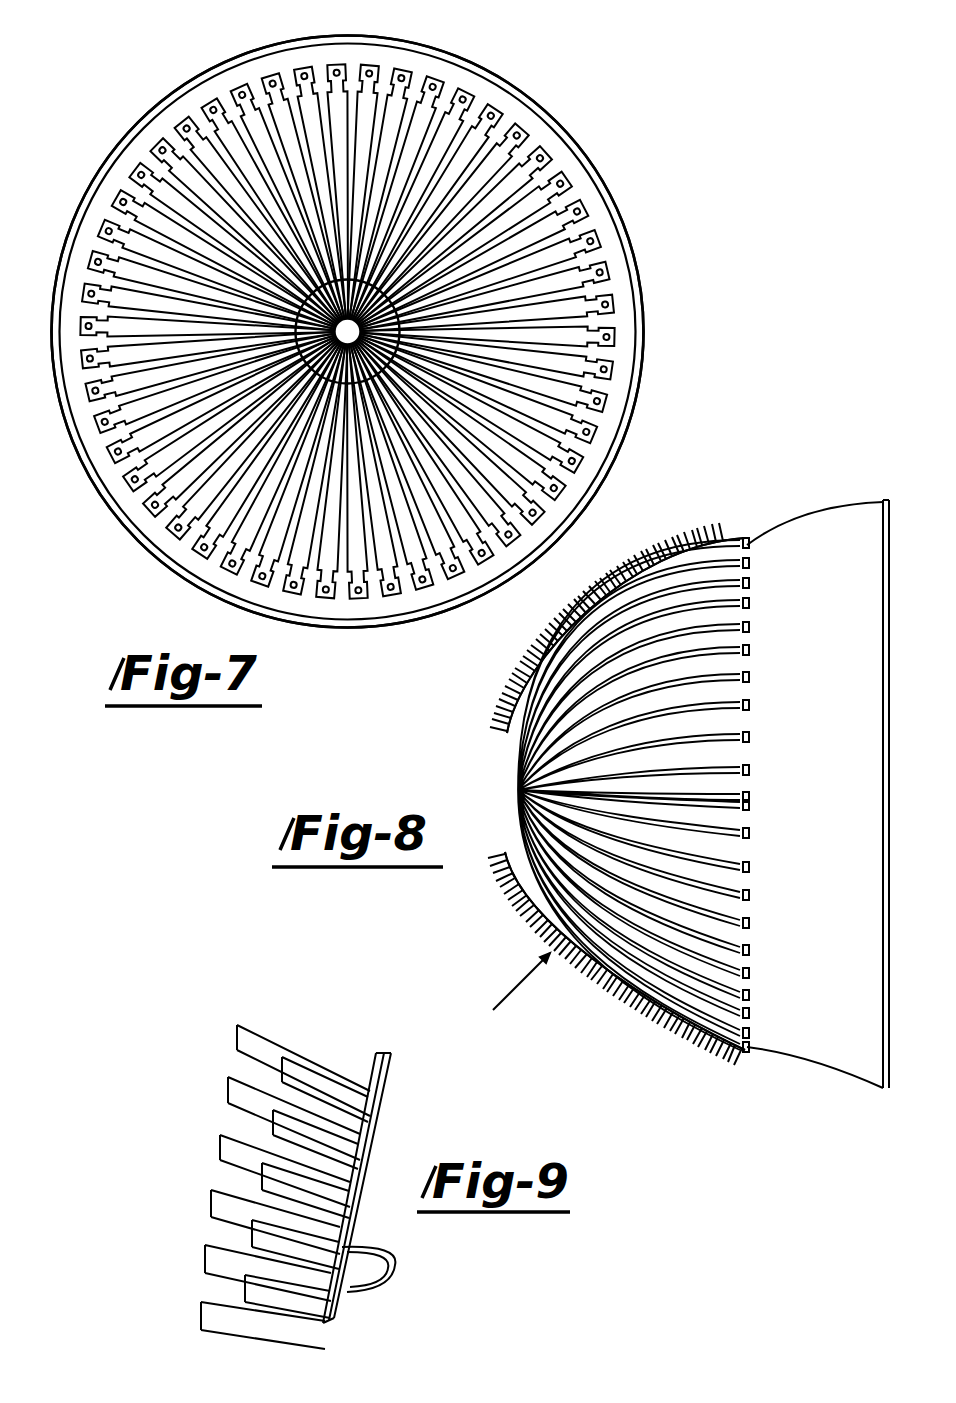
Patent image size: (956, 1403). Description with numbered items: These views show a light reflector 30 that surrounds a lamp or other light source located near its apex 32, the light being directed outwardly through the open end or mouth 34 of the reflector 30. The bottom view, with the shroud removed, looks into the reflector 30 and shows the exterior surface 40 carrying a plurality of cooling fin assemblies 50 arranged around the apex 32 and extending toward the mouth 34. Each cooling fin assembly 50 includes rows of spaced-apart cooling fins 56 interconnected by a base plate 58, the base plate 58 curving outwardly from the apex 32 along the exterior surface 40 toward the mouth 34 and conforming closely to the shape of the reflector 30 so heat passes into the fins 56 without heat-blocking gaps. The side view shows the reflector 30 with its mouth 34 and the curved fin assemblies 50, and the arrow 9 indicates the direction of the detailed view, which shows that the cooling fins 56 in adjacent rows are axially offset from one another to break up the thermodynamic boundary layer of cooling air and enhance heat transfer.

In FIG. 7, the light reflector 30 is at (507, 63).
In FIG. 8, the light reflector 30 is at (620, 1062).
In FIG. 7, the apex 32 is at (395, 372).
In FIG. 7, the mouth 34 is at (560, 110).
In FIG. 8, the mouth 34 is at (888, 548).
In FIG. 7, the exterior surface 40 is at (623, 278).
In FIG. 8, the exterior surface 40 is at (800, 550).
In FIG. 7, the cooling fin assembly 50 is at (268, 78).
In FIG. 8, the cooling fin assembly 50 is at (750, 603).
In FIG. 8, the cooling fin 56 is at (652, 572).
In FIG. 9, the cooling fin 56 is at (247, 1037).
In FIG. 9, the base plate 58 is at (360, 1056).
In FIG. 8, the arrow 9 is at (520, 985).